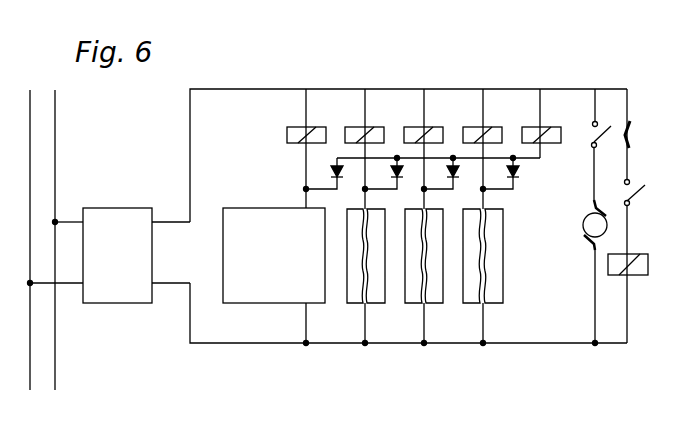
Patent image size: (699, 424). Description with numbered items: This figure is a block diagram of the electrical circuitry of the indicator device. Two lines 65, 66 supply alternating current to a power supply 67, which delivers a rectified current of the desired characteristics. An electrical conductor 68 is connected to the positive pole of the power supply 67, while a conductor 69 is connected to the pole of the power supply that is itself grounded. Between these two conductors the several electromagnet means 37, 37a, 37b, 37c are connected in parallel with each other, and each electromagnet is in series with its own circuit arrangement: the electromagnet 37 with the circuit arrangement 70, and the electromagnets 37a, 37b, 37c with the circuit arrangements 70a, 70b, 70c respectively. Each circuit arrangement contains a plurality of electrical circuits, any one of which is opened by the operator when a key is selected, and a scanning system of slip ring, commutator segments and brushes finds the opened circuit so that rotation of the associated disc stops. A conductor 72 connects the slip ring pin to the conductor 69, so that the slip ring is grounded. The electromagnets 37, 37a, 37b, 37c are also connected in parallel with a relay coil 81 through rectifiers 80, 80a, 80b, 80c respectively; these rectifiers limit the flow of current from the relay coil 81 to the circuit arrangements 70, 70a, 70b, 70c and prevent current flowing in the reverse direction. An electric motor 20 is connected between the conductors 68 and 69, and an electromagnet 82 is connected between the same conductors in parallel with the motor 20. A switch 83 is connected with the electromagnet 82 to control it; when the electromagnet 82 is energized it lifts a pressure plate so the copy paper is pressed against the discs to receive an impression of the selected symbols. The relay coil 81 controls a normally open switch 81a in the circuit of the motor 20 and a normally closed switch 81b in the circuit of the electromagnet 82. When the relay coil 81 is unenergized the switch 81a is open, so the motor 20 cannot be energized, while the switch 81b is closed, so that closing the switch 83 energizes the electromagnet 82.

The electric motor 20 is at (590, 225).
The electromagnet 37 is at (287, 133).
The electromagnet 37a is at (351, 131).
The electromagnet 37b is at (413, 127).
The electromagnet 37c is at (472, 123).
The line 65 is at (30, 117).
The line 66 is at (55, 144).
The power supply 67 is at (125, 218).
The electrical conductor 68 is at (210, 89).
The conductor 69 is at (190, 327).
The circuit arrangement 70 is at (233, 294).
The circuit arrangement 70a is at (352, 298).
The circuit arrangement 70b is at (410, 298).
The circuit arrangement 70c is at (472, 298).
The conductor 72 is at (286, 344).
The rectifier 80 is at (330, 172).
The rectifier 80a is at (394, 160).
The rectifier 80b is at (445, 162).
The rectifier 80c is at (518, 172).
The relay coil 81 is at (535, 131).
The normally open switch 81a is at (590, 128).
The normally closed switch 81b is at (623, 138).
The electromagnet 82 is at (608, 262).
The switch 83 is at (625, 195).